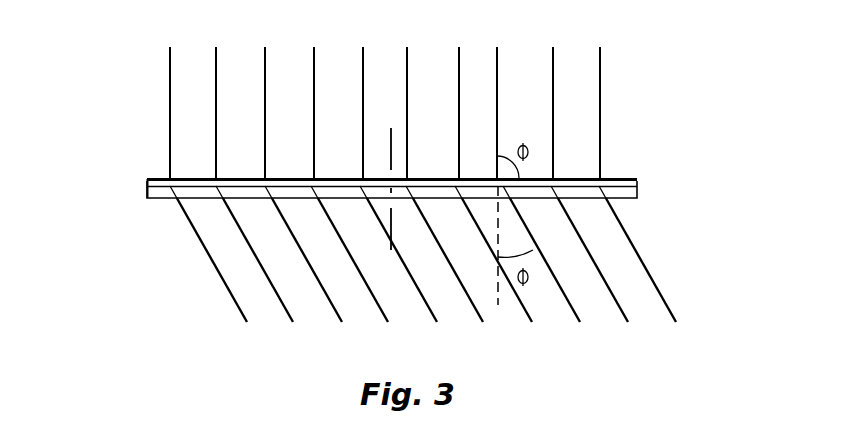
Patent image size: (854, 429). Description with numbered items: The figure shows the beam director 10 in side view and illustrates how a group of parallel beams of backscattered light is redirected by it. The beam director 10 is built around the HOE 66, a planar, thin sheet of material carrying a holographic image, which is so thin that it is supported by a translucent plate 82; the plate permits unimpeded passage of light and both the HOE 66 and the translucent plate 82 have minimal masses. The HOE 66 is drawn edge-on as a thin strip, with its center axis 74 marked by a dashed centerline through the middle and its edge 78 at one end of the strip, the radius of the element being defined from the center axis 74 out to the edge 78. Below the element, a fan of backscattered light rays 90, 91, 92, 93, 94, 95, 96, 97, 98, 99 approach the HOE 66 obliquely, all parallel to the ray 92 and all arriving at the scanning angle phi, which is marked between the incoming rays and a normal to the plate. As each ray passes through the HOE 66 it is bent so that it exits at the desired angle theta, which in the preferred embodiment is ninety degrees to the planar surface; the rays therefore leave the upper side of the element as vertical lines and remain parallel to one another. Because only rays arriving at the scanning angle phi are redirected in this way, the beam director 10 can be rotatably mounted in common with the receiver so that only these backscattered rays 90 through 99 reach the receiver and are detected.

The beam director 10 is at (100, 92).
The HOE 66 is at (637, 181).
The center axis 74 is at (391, 222).
The edge 78 is at (148, 198).
The translucent plate 82 is at (630, 192).
The backscattered light ray 90 is at (676, 322).
The backscattered light ray 91 is at (628, 322).
The ray of backscattered light 92 is at (580, 322).
The backscattered light ray 93 is at (532, 322).
The backscattered light ray 94 is at (483, 322).
The backscattered light ray 95 is at (437, 322).
The backscattered light ray 96 is at (388, 322).
The backscattered light ray 97 is at (342, 322).
The backscattered light ray 98 is at (293, 322).
The backscattered light ray 99 is at (247, 322).